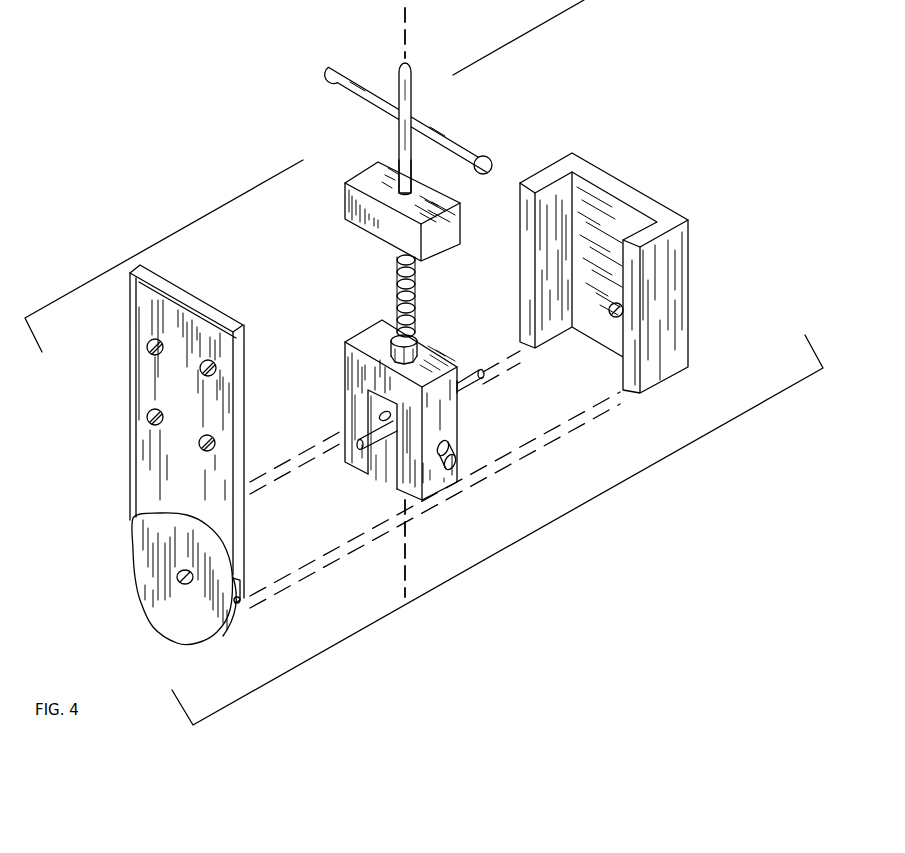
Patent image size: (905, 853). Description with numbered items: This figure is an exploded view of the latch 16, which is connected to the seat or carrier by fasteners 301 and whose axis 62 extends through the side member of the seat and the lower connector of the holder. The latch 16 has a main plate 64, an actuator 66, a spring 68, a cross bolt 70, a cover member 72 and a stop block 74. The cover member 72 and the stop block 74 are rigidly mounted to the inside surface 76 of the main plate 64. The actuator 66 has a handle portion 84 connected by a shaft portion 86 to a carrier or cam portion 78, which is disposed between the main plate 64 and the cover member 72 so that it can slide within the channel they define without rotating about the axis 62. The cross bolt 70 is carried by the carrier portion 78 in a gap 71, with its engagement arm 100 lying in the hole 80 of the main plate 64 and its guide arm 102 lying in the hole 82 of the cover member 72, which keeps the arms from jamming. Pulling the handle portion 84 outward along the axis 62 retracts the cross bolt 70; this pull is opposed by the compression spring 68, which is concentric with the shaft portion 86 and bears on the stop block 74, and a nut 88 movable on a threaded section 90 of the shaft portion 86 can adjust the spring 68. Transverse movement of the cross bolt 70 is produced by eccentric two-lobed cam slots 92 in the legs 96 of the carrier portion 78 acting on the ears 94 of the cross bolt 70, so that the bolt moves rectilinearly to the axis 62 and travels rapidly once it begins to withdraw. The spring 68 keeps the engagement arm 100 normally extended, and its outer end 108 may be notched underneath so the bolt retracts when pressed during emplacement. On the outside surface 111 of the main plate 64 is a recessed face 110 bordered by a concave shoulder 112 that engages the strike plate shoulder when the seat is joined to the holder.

The latch 16 is at (623, 482).
The axis 62 is at (411, 41).
The main plate 64 is at (147, 352).
The actuator 66 is at (400, 163).
The spring 68 is at (423, 292).
The cross bolt 70 is at (466, 378).
The gap 71 is at (380, 465).
The cover member 72 is at (633, 197).
The stop block 74 is at (452, 218).
The inside surface 76 is at (182, 283).
The carrier portion 78 is at (378, 374).
The hole 80 is at (178, 577).
The hole 82 is at (611, 311).
The handle portion 84 is at (445, 130).
The shaft portion 86 is at (399, 135).
The nut 88 is at (416, 354).
The threaded section 90 is at (410, 342).
The cam slots 92 is at (455, 465).
The ears 94 is at (380, 414).
The legs 96 is at (357, 450).
The engagement arm 100 is at (356, 442).
The guide arm 102 is at (484, 378).
The outer end 108 is at (350, 450).
The recessed face 110 is at (200, 622).
The outside surface 111 is at (142, 392).
The shoulder 112 is at (244, 602).
The fasteners 301 is at (212, 366).